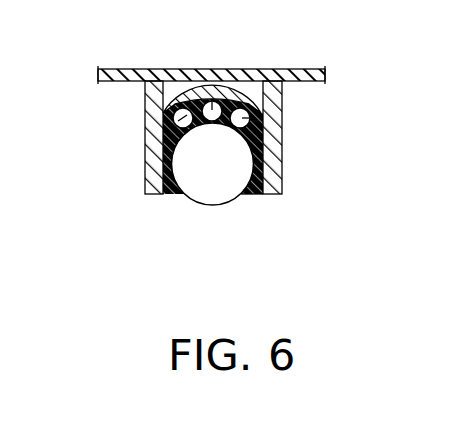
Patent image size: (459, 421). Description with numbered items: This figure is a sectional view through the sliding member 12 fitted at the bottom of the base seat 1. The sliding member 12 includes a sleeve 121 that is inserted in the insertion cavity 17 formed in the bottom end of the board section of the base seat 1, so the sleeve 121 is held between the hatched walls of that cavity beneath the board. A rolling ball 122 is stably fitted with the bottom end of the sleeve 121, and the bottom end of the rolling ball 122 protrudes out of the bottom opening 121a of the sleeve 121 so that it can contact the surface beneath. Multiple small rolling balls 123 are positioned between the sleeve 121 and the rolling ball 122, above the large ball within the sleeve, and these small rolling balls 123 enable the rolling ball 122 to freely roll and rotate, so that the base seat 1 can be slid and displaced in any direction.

The base seat 1 is at (284, 69).
The sliding member 12 is at (168, 195).
The insertion cavity 17 is at (182, 92).
The sleeve 121 is at (266, 150).
The bottom opening 121a is at (245, 196).
The rolling ball 122 is at (212, 185).
The small rolling balls 123 is at (219, 96).